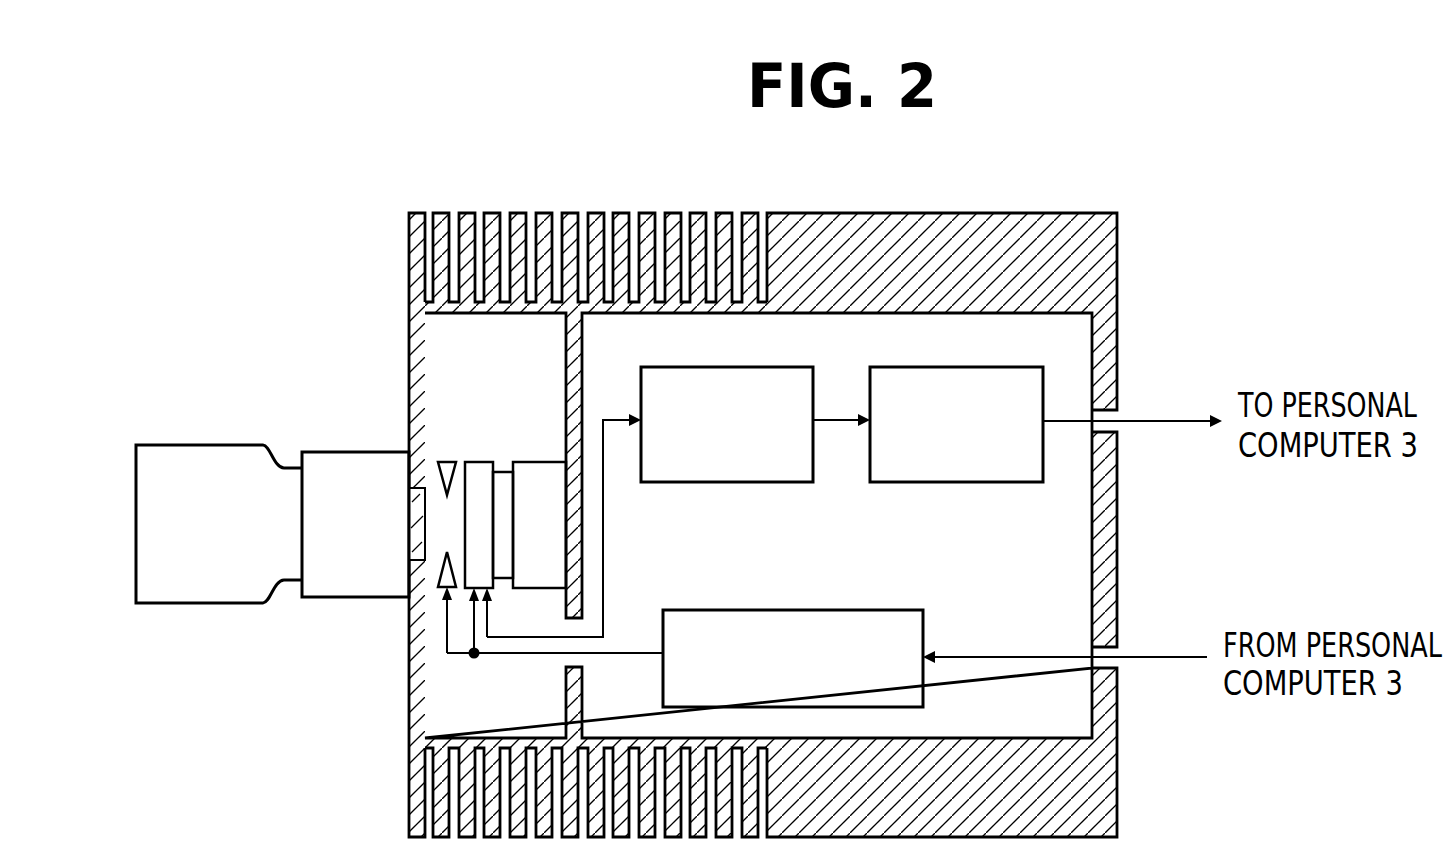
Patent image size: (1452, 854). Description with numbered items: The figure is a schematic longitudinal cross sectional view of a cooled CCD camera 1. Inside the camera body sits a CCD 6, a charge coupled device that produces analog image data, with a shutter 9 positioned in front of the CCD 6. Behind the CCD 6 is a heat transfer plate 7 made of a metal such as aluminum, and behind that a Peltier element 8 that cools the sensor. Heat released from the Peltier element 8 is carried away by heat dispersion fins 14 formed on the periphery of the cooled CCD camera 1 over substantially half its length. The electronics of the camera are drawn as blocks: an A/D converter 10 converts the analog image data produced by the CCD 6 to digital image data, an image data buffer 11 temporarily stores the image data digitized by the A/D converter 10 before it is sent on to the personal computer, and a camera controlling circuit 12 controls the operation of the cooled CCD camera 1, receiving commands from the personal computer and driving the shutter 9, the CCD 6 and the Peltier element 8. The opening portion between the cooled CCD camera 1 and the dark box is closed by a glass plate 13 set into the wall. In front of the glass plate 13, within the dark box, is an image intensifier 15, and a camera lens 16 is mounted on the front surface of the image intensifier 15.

The cooled CCD camera 1 is at (1146, 250).
The CCD 6 is at (478, 475).
The heat transfer plate 7 is at (505, 490).
The Peltier element 8 is at (550, 470).
The shutter 9 is at (447, 460).
The A/D converter 10 is at (723, 483).
The image data buffer 11 is at (942, 483).
The camera controlling circuit 12 is at (843, 610).
The glass plate 13 is at (410, 507).
The heat dispersion fins 14 is at (533, 200).
The image intensifier 15 is at (346, 568).
The camera lens 16 is at (207, 572).